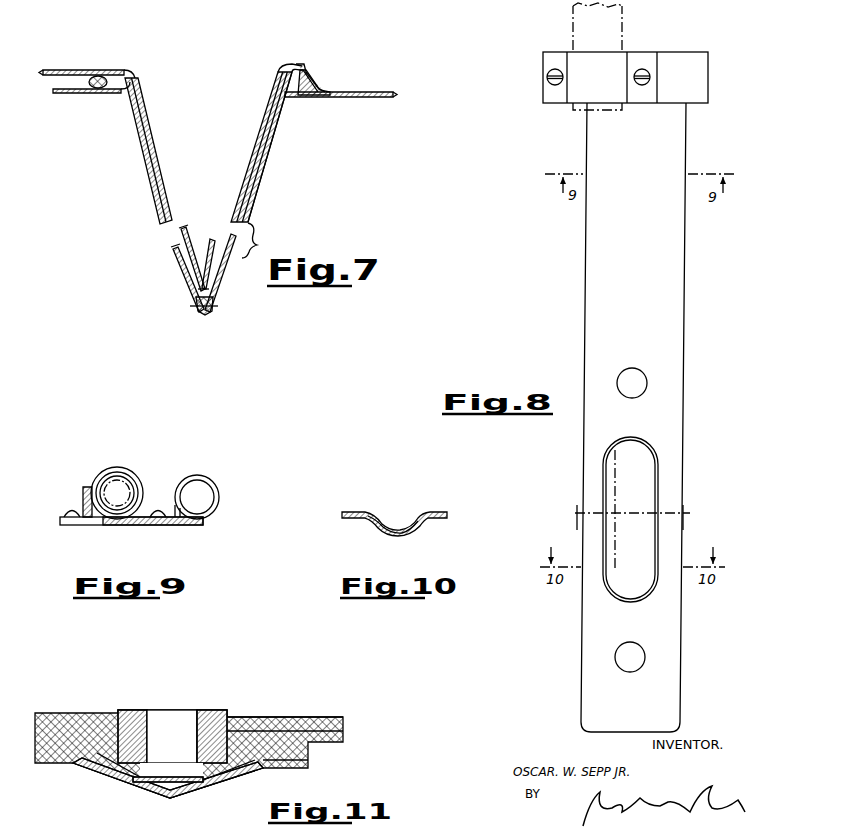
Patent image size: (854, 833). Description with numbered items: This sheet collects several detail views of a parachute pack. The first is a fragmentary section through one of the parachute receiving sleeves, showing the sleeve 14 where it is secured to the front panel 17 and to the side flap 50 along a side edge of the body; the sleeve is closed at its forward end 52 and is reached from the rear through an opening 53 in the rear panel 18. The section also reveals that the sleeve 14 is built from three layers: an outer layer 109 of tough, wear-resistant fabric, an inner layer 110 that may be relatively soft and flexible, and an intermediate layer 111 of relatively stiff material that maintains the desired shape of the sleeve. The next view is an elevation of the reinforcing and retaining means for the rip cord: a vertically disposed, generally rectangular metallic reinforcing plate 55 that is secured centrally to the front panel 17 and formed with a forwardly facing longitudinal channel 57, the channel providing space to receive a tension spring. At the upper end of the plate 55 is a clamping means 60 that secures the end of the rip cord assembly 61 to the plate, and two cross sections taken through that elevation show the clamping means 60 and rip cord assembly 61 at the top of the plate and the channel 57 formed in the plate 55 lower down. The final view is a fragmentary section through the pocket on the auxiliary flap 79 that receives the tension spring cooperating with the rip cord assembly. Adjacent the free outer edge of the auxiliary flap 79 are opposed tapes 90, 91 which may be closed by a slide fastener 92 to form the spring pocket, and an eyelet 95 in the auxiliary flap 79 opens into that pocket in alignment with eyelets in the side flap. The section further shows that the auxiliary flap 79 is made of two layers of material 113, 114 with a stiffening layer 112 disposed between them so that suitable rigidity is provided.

In FIG. 7, the sleeve 14 is at (258, 193).
In FIG. 7, the front fabric panel 17 is at (72, 94).
In FIG. 7, the rear fabric panel 18 is at (78, 70).
In FIG. 7, the side flap 50 is at (357, 84).
In FIG. 7, the forward end 52 is at (207, 313).
In FIG. 9, the opening 53 is at (163, 526).
In FIG. 8, the reinforcing plate 55 is at (687, 323).
In FIG. 10, the reinforcing plate 55 is at (432, 512).
In FIG. 8, the longitudinal channel 57 is at (652, 473).
In FIG. 10, the longitudinal channel 57 is at (377, 512).
In FIG. 8, the clamping means 60 is at (642, 58).
In FIG. 9, the clamping means 60 is at (148, 490).
In FIG. 8, the rip cord assembly 61 is at (578, 42).
In FIG. 9, the rip cord assembly 61 is at (90, 486).
In FIG. 11, the auxiliary flap 79 is at (348, 739).
In FIG. 11, the tape 90 is at (139, 788).
In FIG. 11, the tape 91 is at (182, 795).
In FIG. 11, the slide fastener 92 is at (212, 784).
In FIG. 11, the eyelet 95 is at (197, 710).
In FIG. 7, the outer layer 109 is at (266, 178).
In FIG. 7, the inner layer 110 is at (265, 120).
In FIG. 7, the intermediate layer 111 is at (272, 137).
In FIG. 11, the stiffening layer 112 is at (350, 733).
In FIG. 11, the layer of material 113 is at (337, 747).
In FIG. 11, the layer of material 114 is at (345, 718).